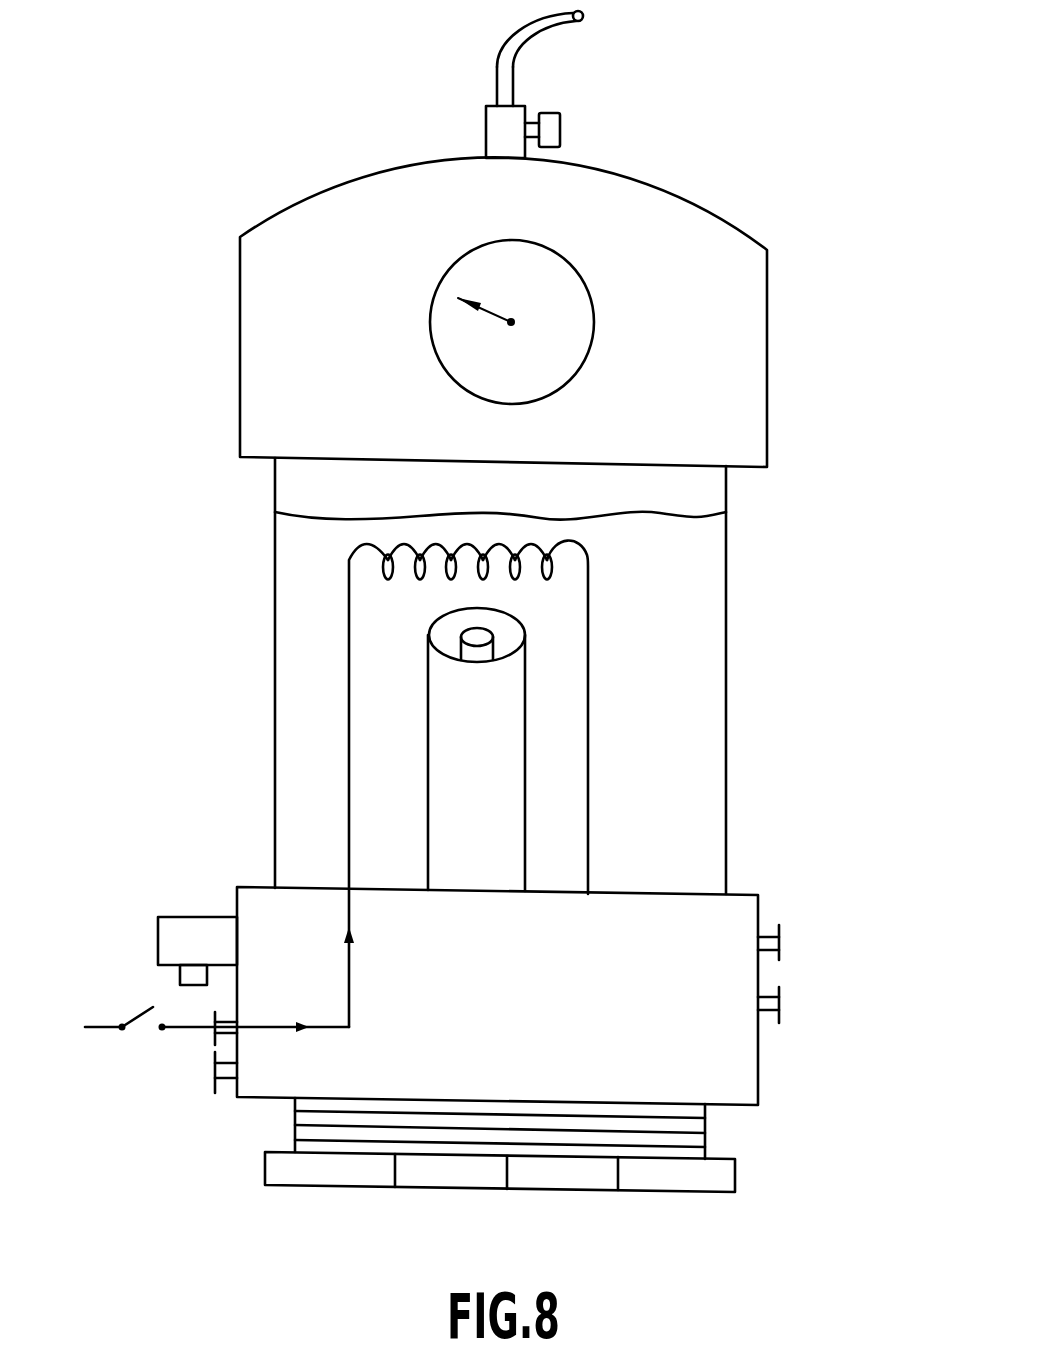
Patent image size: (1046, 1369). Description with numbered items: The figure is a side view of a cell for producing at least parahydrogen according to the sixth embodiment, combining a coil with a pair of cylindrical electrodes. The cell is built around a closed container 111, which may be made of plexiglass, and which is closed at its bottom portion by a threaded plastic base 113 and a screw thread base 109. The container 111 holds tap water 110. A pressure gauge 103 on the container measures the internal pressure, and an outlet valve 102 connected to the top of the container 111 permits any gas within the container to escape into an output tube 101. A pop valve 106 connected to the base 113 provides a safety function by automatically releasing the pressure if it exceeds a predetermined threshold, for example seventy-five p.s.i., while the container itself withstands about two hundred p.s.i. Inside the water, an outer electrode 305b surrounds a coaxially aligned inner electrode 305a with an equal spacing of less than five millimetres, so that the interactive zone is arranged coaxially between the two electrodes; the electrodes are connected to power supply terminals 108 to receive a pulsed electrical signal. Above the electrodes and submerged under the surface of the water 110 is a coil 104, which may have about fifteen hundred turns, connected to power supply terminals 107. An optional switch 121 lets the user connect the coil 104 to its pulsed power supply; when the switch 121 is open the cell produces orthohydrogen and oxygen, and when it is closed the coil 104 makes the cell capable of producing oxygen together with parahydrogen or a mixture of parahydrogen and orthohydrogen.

The output tube 101 is at (583, 15).
The outlet valve 102 is at (560, 130).
The pressure gauge 103 is at (518, 367).
The coil 104 is at (350, 560).
The tap water 110 is at (690, 553).
The closed container 111 is at (273, 677).
The inner electrode 305a is at (494, 637).
The outer electrode 305b is at (525, 752).
The pop valve 106 is at (178, 917).
The power supply terminals 107 is at (182, 1067).
The power supply terminals 108 is at (830, 945).
The threaded plastic base 113 is at (757, 1072).
The screw thread base 109 is at (752, 1132).
The switch 121 is at (142, 1032).